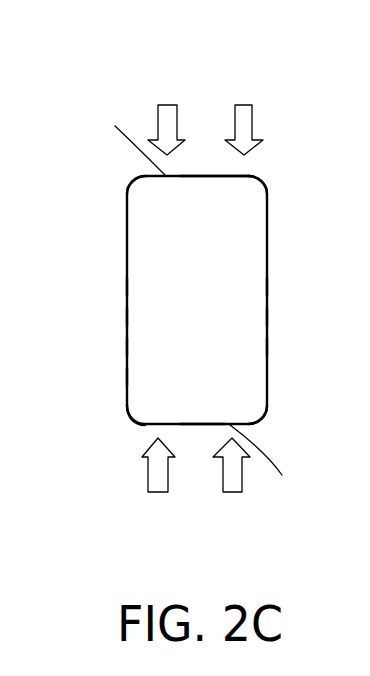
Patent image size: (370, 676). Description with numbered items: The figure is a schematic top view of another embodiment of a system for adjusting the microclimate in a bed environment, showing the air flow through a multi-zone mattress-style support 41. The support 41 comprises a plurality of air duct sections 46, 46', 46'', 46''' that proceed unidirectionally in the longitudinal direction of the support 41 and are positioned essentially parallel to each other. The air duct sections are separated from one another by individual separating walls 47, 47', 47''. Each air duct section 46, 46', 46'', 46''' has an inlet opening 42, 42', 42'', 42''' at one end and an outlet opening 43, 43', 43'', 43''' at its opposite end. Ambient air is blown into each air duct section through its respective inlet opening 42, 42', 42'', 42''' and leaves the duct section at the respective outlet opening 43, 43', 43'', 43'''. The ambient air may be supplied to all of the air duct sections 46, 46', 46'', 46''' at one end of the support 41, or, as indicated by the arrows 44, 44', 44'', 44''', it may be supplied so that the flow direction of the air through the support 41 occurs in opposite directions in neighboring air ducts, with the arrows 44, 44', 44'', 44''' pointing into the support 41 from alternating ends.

The multi-zone mattress-style support 41 is at (127, 236).
The inlet opening 42 is at (103, 432).
The inlet opening 42' is at (122, 141).
The inlet opening 42'' is at (271, 462).
The inlet opening 42''' is at (292, 167).
The outlet opening 43 is at (105, 169).
The outlet opening 43' is at (201, 459).
The outlet opening 43'' is at (215, 142).
The outlet opening 43''' is at (287, 432).
The arrow 44 is at (156, 501).
The arrow 44' is at (164, 95).
The arrow 44'' is at (230, 501).
The arrow 44''' is at (245, 95).
The air duct section 46 is at (91, 291).
The air duct section 46' is at (88, 321).
The air duct section 46'' is at (86, 351).
The air duct section 46''' is at (82, 381).
The separating wall 47 is at (303, 291).
The separating wall 47' is at (306, 321).
The separating wall 47'' is at (307, 351).